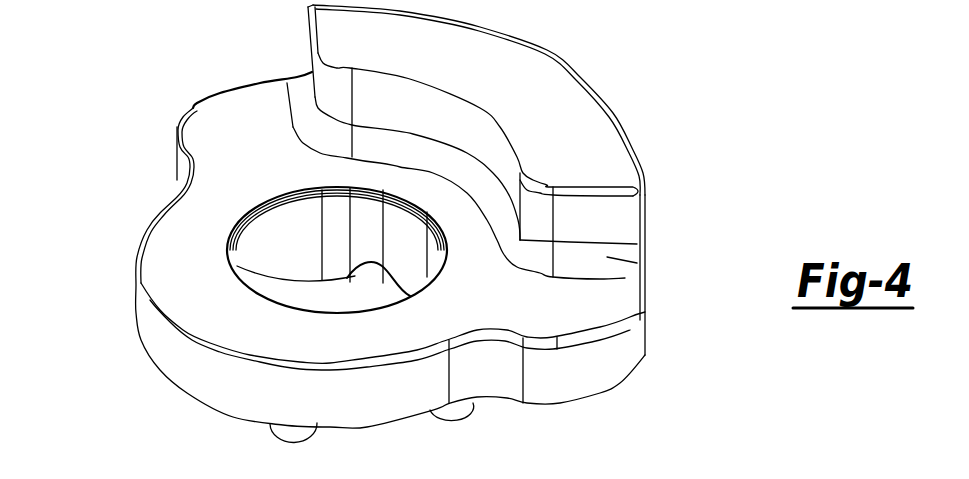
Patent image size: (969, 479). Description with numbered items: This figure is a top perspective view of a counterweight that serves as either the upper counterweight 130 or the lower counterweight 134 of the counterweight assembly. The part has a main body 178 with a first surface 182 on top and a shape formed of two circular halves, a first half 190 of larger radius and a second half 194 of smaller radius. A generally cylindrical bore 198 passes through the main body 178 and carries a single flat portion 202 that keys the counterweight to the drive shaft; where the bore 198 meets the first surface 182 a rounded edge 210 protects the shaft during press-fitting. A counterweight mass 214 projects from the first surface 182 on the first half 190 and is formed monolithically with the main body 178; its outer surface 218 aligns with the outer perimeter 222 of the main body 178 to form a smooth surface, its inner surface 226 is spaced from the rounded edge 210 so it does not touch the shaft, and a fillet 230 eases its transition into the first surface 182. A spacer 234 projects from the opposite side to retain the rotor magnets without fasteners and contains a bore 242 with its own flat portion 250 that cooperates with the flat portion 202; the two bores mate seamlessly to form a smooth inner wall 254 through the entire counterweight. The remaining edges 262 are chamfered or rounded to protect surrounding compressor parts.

The upper counterweight 130 is at (647, 80).
The lower counterweight 134 is at (745, 478).
The main body 178 is at (637, 327).
The first surface 182 is at (216, 117).
The first half 190 is at (192, 104).
The second half 194 is at (176, 209).
The bore 198 is at (250, 244).
The flat portion 202 is at (413, 208).
The rounded edge 210 is at (260, 214).
The counterweight mass 214 is at (540, 52).
The outer surface 218 is at (646, 165).
The outer perimeter 222 is at (137, 300).
The inner surface 226 is at (390, 100).
The fillet 230 is at (607, 258).
The spacer 234 is at (277, 443).
The bore 242 is at (277, 300).
The flat portion 250 is at (368, 262).
The inner wall 254 is at (290, 243).
The rounded edges 262 is at (310, 44).